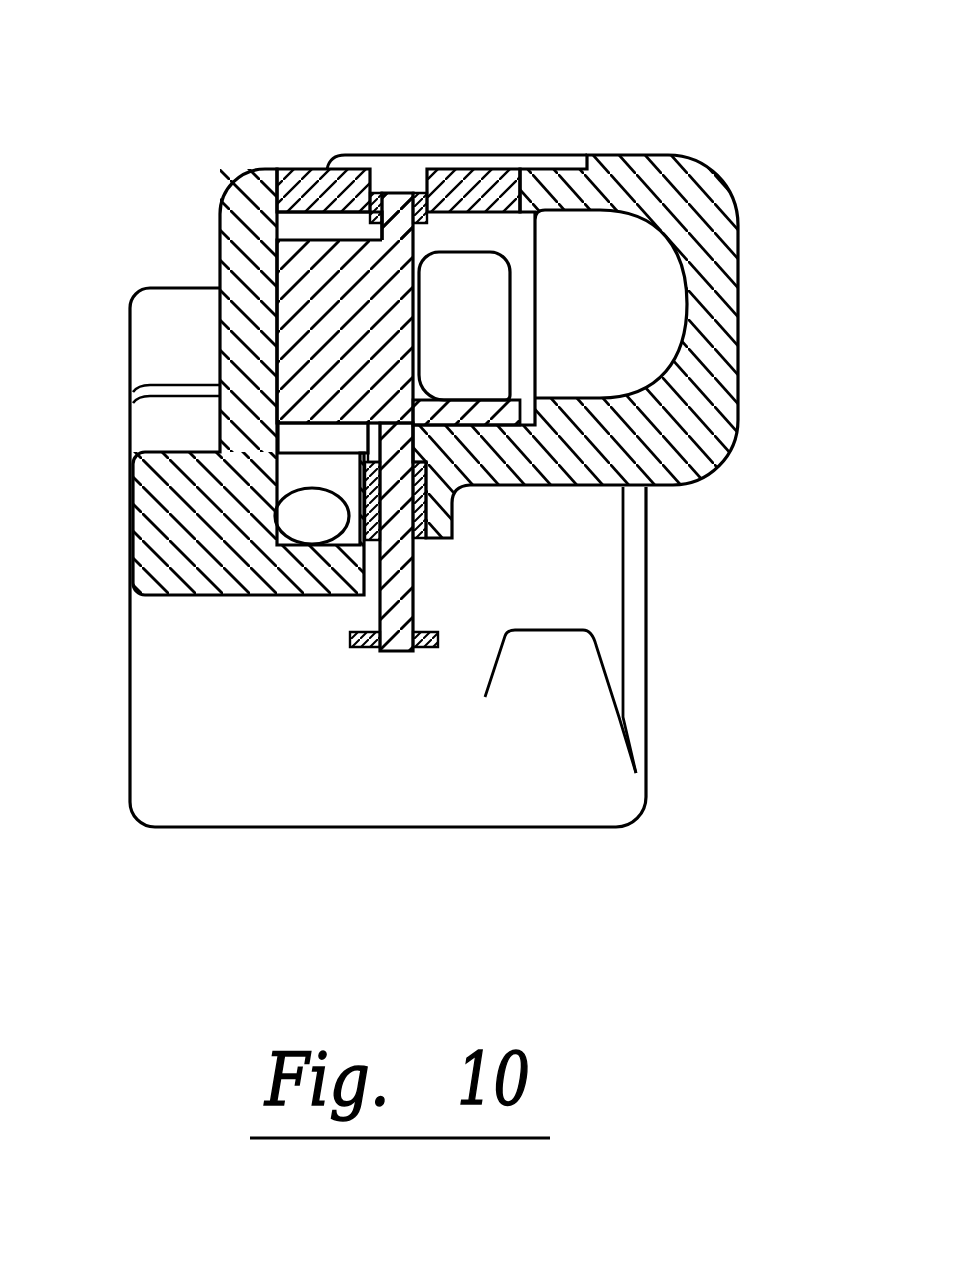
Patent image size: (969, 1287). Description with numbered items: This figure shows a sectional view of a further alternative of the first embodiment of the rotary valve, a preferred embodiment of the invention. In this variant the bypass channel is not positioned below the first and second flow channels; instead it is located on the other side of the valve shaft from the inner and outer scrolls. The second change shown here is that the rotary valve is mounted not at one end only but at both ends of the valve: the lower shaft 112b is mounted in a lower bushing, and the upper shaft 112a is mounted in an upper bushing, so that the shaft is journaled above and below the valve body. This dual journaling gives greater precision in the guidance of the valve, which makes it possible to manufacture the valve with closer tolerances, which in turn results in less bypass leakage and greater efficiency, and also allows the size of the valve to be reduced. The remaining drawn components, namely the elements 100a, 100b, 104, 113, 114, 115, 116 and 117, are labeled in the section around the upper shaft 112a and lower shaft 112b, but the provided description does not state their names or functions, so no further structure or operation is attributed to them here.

The upper seal / housing plate 100a is at (380, 187).
The lower seal 100b is at (457, 502).
The bearing block 104 is at (297, 290).
The upper shaft 112a is at (397, 187).
The lower shaft 112b is at (410, 594).
The housing body 113 is at (648, 332).
The cavity 114 is at (478, 305).
The slot 115 is at (307, 435).
The ball 116 is at (312, 525).
The retaining flange 117 is at (423, 655).